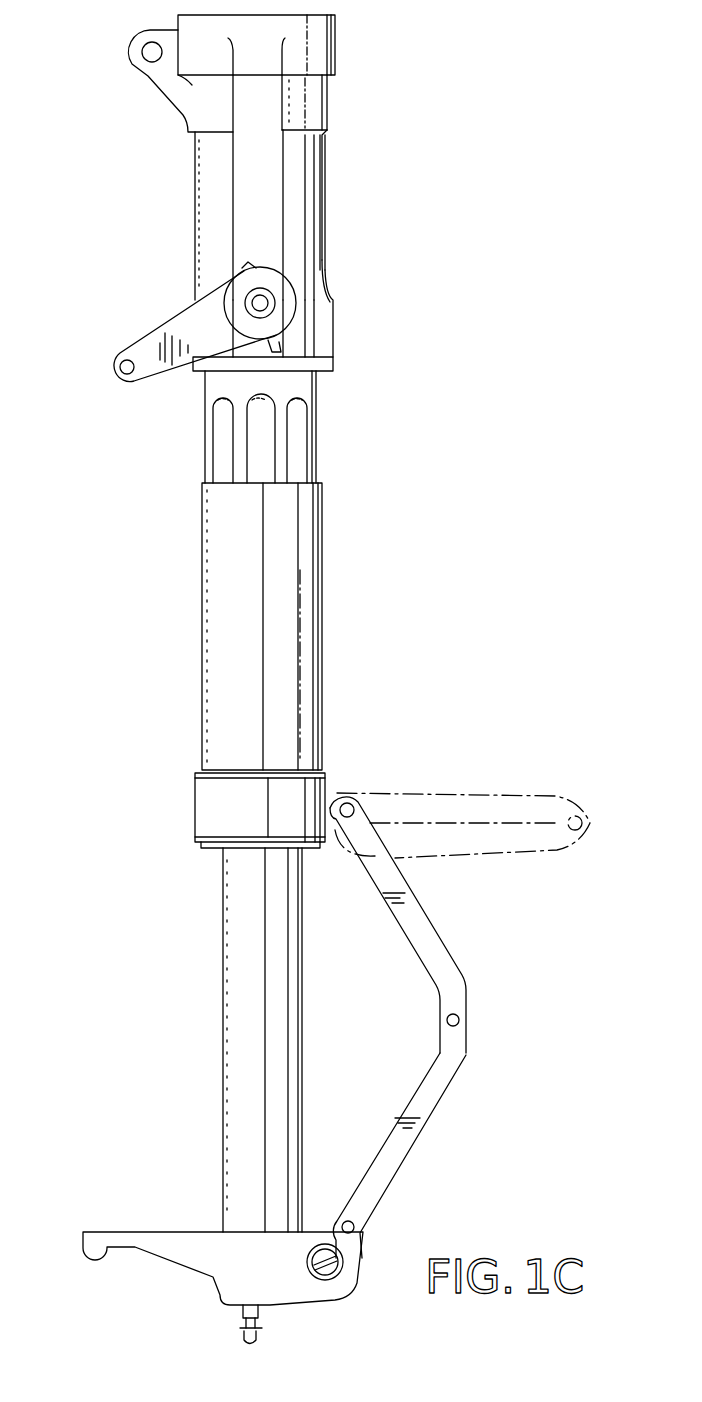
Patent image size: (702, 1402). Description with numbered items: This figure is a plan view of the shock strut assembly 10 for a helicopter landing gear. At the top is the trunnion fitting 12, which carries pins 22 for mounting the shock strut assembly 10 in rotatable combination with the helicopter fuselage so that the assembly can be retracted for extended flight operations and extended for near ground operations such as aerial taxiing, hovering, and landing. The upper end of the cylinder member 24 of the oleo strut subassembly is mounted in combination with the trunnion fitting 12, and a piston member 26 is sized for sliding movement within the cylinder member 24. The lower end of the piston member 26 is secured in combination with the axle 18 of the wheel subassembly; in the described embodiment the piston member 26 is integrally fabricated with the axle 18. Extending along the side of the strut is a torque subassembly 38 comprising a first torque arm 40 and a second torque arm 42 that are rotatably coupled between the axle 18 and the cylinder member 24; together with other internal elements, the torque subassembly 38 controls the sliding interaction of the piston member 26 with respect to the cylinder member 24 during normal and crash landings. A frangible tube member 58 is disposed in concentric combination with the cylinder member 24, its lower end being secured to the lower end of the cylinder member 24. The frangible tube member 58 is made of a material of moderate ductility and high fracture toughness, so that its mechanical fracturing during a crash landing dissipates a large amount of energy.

The shock strut assembly 10 is at (120, 200).
The trunnion fitting 12 is at (348, 233).
The axle 18 is at (343, 1260).
The pins 22 is at (282, 295).
The cylinder member 24 is at (316, 437).
The piston member 26 is at (232, 1011).
The torque subassembly 38 is at (525, 903).
The first torque arm 40 is at (436, 958).
The second torque arm 42 is at (388, 1168).
The frangible tube member 58 is at (316, 585).